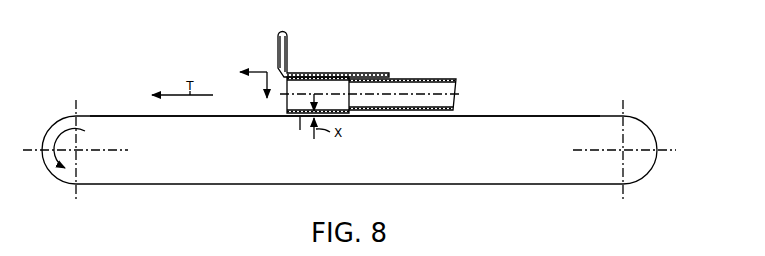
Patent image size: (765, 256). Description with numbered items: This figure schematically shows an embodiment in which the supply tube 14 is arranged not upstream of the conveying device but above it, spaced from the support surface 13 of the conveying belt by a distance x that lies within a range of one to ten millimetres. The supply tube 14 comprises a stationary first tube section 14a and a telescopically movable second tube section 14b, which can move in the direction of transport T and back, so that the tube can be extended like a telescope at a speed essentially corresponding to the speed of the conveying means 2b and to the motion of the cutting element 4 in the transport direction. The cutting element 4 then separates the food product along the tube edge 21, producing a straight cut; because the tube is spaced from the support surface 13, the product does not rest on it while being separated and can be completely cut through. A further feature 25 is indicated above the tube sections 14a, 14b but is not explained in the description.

The conveying means 2b is at (115, 185).
The support surface 13 is at (135, 116).
The cutting element 4 is at (277, 45).
The supply tube 14 is at (393, 76).
The first tube section 14a is at (427, 80).
The second tube section 14b is at (325, 82).
The tube edge 21 is at (300, 130).
The air flow direction 25 is at (380, 50).